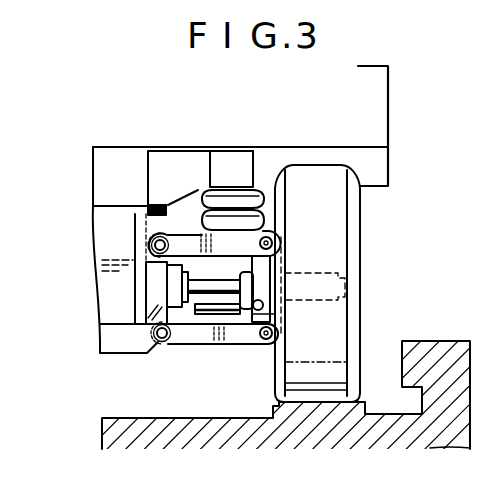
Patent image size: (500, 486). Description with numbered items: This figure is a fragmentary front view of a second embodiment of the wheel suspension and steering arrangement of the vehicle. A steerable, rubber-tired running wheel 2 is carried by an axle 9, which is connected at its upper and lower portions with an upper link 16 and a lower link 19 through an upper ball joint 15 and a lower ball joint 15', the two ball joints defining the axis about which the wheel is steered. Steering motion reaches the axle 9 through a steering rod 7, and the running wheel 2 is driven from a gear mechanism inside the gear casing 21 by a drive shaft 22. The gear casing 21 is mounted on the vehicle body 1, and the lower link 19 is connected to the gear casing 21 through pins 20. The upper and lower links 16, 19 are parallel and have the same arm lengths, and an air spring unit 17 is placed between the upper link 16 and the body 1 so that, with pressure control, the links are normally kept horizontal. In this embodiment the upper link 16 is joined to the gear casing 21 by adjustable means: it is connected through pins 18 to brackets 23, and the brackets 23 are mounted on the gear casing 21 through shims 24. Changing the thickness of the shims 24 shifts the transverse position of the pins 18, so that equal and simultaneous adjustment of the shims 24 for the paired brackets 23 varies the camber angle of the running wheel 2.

The body 1 is at (377, 102).
The running wheel 2 is at (335, 232).
The steering rod 7 is at (235, 311).
The axle 9 is at (262, 272).
The upper ball joint 15 is at (290, 222).
The lower ball joint 15' is at (298, 342).
The upper link 16 is at (190, 236).
The air spring unit 17 is at (225, 202).
The pin 18 is at (177, 235).
The lower link 19 is at (232, 338).
The pin 20 is at (160, 344).
The gear casing 21 is at (120, 312).
The drive shaft 22 is at (193, 290).
The bracket 23 is at (158, 238).
The shim 24 is at (155, 232).